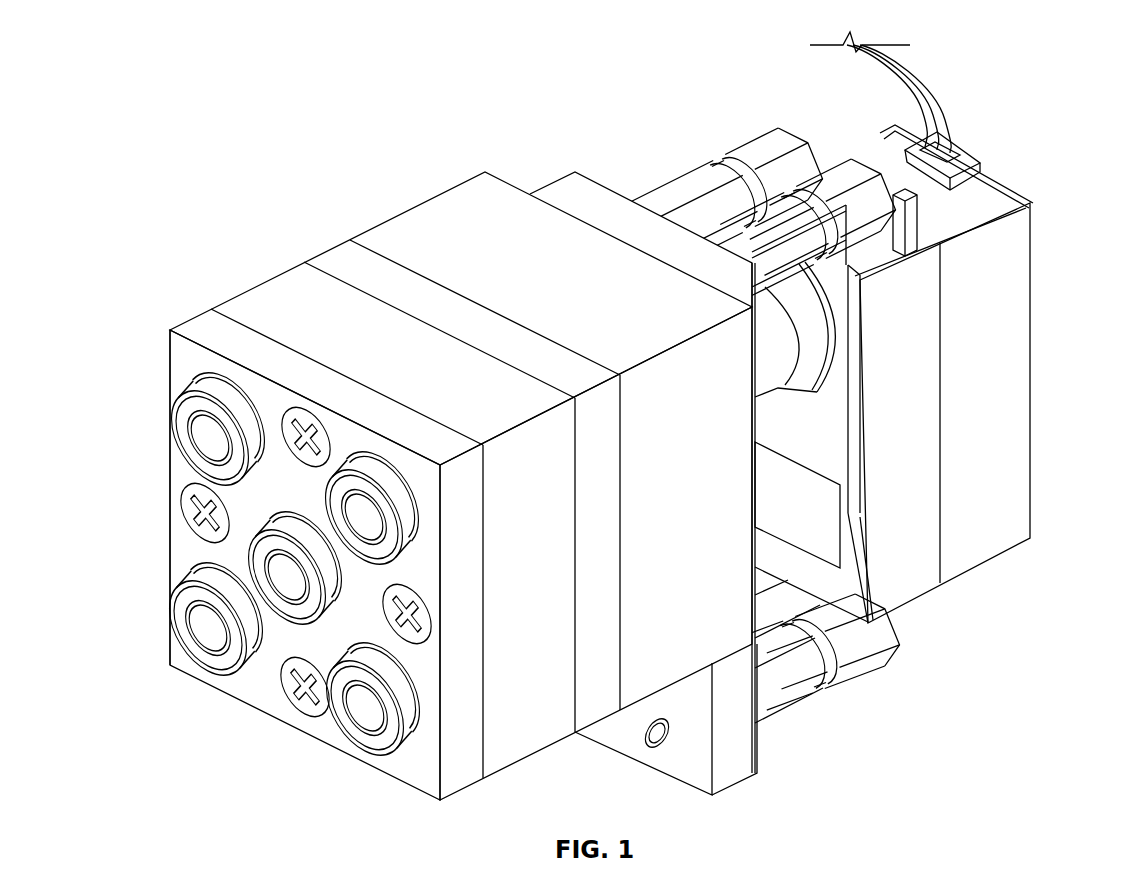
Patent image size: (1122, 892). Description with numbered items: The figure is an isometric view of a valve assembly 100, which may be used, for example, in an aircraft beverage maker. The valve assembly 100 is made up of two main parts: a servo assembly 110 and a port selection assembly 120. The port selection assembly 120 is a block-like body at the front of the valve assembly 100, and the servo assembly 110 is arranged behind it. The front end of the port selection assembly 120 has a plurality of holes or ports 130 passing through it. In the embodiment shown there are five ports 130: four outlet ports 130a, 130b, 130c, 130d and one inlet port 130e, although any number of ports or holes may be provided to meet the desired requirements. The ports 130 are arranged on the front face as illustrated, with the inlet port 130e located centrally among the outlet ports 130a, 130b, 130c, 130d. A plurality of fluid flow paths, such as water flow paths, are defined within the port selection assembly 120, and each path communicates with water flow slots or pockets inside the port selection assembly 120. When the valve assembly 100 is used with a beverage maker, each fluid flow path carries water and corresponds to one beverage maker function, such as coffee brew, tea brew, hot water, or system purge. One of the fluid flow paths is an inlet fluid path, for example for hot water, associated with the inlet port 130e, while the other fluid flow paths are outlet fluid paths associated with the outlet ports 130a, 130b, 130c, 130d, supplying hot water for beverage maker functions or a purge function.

The valve assembly 100 is at (545, 70).
The servo assembly 110 is at (1010, 158).
The port selection assembly 120 is at (289, 170).
The ports 130 is at (142, 373).
The outlet port 130a is at (193, 418).
The outlet port 130b is at (193, 628).
The outlet port 130c is at (357, 495).
The outlet port 130d is at (367, 707).
The inlet port 130e is at (293, 582).